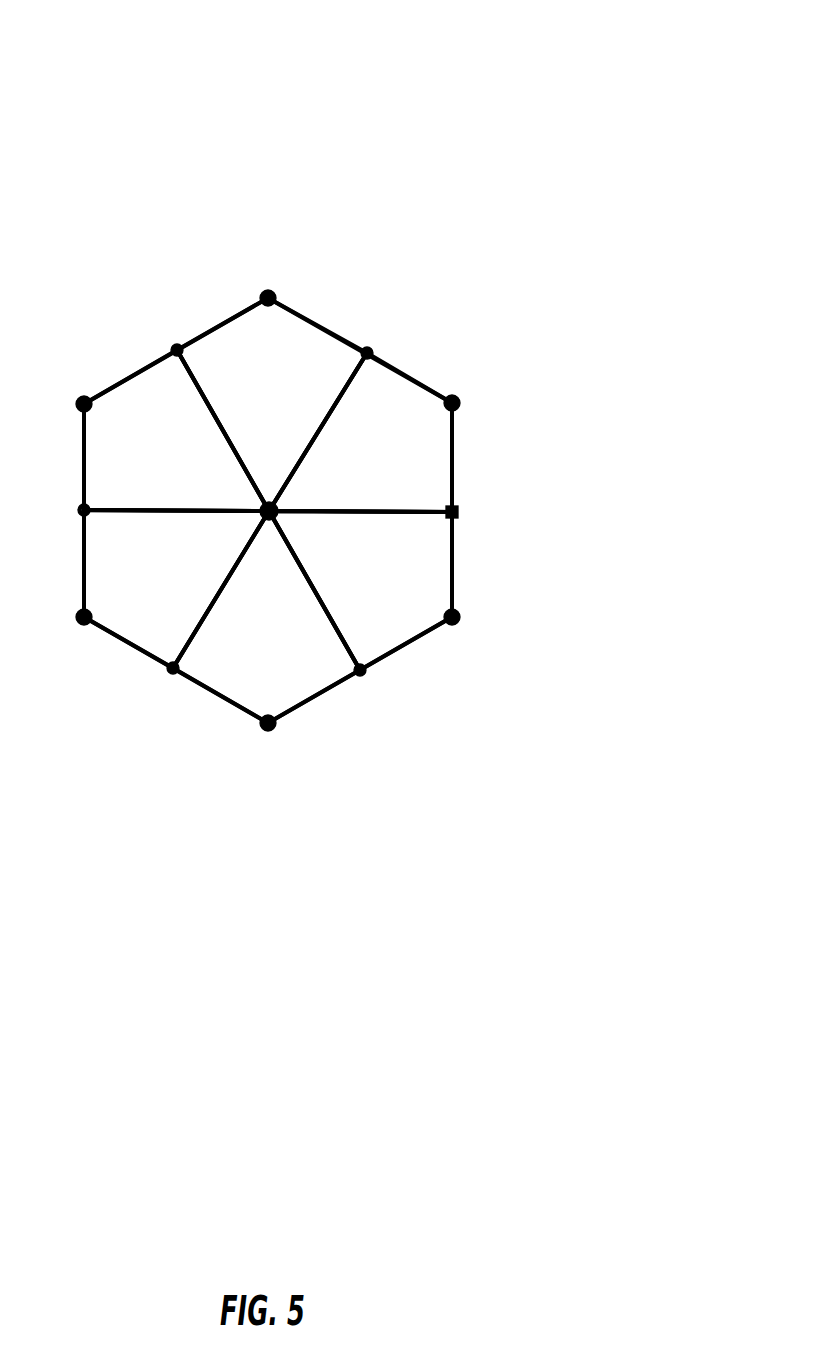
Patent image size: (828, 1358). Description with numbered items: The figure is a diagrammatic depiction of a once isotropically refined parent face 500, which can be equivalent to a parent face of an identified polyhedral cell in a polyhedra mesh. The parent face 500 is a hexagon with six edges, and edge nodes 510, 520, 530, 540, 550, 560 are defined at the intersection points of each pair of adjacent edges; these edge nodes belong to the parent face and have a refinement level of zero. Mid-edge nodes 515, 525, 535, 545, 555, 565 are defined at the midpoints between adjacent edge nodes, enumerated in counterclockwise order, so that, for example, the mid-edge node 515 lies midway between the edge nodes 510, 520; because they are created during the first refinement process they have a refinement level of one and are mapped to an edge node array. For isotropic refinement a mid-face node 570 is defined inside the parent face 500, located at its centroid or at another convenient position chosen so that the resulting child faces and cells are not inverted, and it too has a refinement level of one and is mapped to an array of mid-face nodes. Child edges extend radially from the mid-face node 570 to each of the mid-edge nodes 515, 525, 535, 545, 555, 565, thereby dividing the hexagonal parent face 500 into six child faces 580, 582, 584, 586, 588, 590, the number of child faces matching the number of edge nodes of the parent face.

The parent face 500 is at (423, 70).
The edge node 510 is at (80, 626).
The mid-edge node 515 is at (172, 674).
The edge node 520 is at (265, 731).
The mid-edge node 525 is at (358, 676).
The edge node 530 is at (446, 625).
The mid-edge node 535 is at (456, 496).
The edge node 540 is at (453, 399).
The mid-edge node 545 is at (367, 348).
The edge node 550 is at (270, 294).
The mid-edge node 555 is at (177, 345).
The edge node 560 is at (86, 400).
The mid-edge node 565 is at (82, 494).
The mid-face node 570 is at (270, 498).
The child face 580 is at (182, 587).
The child face 582 is at (291, 630).
The child face 584 is at (397, 579).
The child face 586 is at (400, 467).
The child face 588 is at (292, 390).
The child face 590 is at (172, 462).